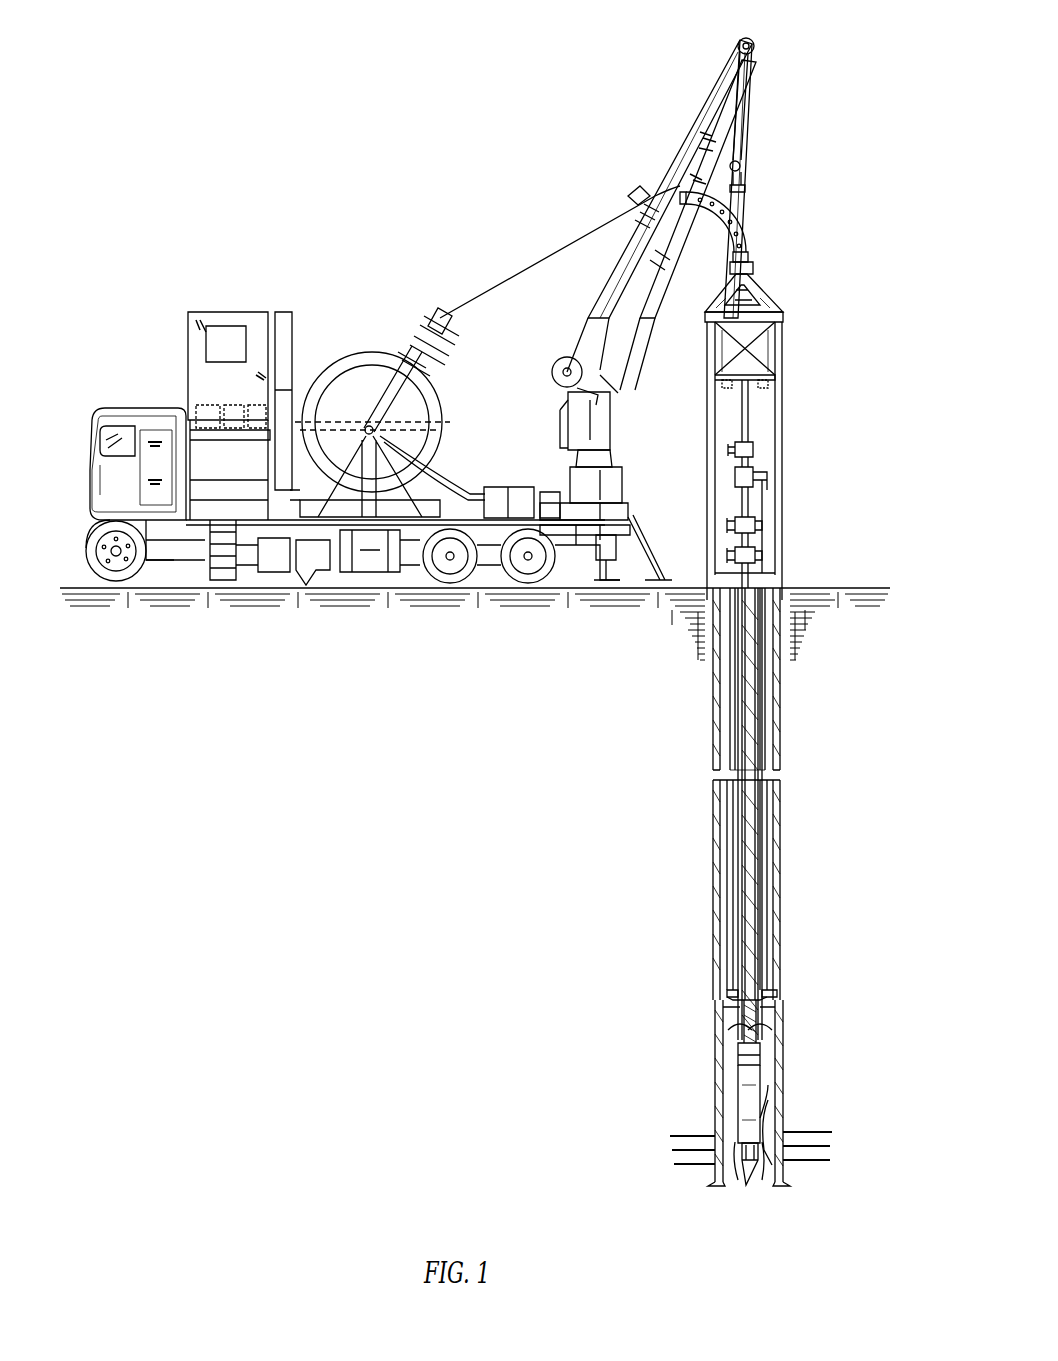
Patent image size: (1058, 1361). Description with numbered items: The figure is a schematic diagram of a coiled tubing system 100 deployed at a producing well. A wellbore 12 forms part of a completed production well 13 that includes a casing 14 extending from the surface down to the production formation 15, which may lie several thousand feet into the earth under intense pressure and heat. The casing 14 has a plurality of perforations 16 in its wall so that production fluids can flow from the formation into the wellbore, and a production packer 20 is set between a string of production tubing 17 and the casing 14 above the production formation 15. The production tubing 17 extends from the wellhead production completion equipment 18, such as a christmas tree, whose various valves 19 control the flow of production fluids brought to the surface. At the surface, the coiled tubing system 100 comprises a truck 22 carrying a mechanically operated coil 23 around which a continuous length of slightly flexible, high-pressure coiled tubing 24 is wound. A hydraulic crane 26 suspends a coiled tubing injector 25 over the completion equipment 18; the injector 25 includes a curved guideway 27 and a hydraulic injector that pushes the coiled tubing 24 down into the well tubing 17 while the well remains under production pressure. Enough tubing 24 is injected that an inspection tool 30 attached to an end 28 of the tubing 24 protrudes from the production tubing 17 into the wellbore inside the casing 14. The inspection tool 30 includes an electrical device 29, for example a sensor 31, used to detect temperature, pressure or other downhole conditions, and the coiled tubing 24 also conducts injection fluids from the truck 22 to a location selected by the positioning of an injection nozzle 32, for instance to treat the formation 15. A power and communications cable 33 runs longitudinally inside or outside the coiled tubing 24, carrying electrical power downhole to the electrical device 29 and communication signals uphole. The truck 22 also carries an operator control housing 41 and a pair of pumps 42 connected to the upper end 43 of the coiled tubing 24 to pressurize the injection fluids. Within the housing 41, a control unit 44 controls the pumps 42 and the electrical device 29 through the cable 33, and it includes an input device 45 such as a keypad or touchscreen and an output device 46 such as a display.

The coiled tubing system 100 is at (296, 104).
The wellbore 12 is at (776, 712).
The completed production well 13 is at (712, 832).
The casing 14 is at (780, 802).
The production formation 15 is at (836, 1124).
The perforations 16 is at (768, 1100).
The production tubing 17 is at (778, 853).
The wellhead production completion equipment 18 is at (786, 448).
The valves 19 is at (768, 556).
The production packer 20 is at (770, 982).
The truck 22 is at (106, 412).
The mechanically operated coil 23 is at (440, 408).
The coiled tubing 24 is at (514, 284).
The coiled tubing injector 25 is at (756, 300).
The hydraulic crane 26 is at (578, 322).
The curved guideway 27 is at (742, 232).
The end of the tubing 28 is at (718, 1007).
The electrical device 29 is at (736, 1052).
The inspection tool 30 is at (736, 1090).
The sensor 31 is at (762, 1178).
The injection nozzle 32 is at (733, 1175).
The power and communications cable 33 is at (346, 398).
The operator control housing 41 is at (188, 356).
The pumps 42 is at (506, 487).
The upper end of the coiled tubing 43 is at (458, 490).
The control unit 44 is at (202, 405).
The input device 45 is at (230, 405).
The output device 46 is at (254, 405).